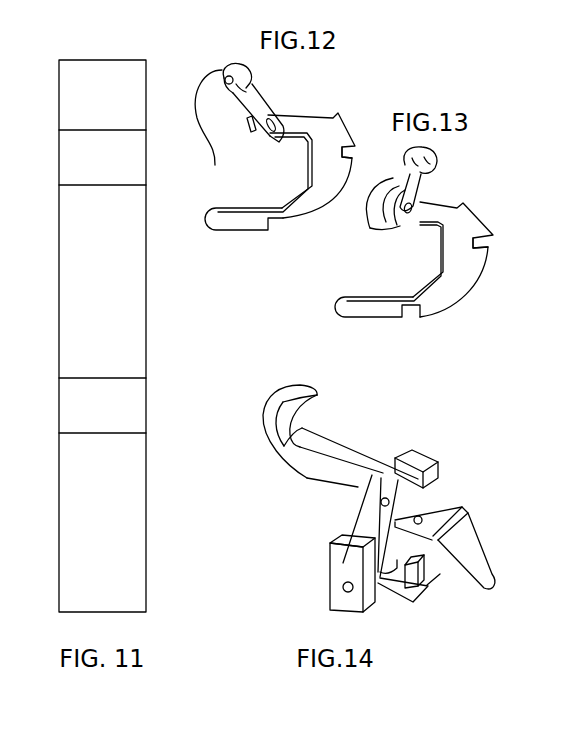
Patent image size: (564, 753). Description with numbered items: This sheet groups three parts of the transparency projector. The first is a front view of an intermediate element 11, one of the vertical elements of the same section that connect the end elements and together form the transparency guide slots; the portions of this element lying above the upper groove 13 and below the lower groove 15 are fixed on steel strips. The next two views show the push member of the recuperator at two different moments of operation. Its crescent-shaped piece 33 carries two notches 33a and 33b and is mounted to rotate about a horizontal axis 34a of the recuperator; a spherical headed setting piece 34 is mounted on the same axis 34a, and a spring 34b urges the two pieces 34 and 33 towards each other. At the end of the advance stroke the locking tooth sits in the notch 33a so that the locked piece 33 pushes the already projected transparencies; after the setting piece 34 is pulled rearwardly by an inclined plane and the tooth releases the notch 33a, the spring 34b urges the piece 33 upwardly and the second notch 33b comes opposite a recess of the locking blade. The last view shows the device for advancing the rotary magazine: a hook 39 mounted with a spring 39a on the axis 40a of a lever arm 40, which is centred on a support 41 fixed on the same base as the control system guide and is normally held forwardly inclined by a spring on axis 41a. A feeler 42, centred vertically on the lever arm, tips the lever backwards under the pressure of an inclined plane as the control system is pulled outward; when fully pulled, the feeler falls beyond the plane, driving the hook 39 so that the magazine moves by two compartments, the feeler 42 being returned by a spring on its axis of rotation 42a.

In FIG. 11, the intermediate element 11 is at (100, 274).
In FIG. 11, the upper groove 13 is at (82, 96).
In FIG. 11, the lower groove 15 is at (95, 498).
In FIG. 12, the crescent-shaped piece 33 is at (322, 188).
In FIG. 13, the crescent-shaped piece 33 is at (447, 288).
In FIG. 12, the notch 33a is at (358, 146).
In FIG. 13, the notch 33a is at (491, 238).
In FIG. 12, the second notch 33b is at (272, 233).
In FIG. 13, the second notch 33b is at (408, 313).
In FIG. 12, the spherical headed setting piece 34 is at (215, 165).
In FIG. 12, the horizontal axis 34a is at (276, 140).
In FIG. 13, the horizontal axis 34a is at (420, 197).
In FIG. 12, the spring 34b is at (247, 97).
In FIG. 13, the spring 34b is at (370, 223).
In FIG. 14, the hook 39 is at (302, 435).
In FIG. 14, the spring 39a is at (310, 478).
In FIG. 14, the lever arm 40 is at (377, 527).
In FIG. 14, the axis 40a is at (389, 500).
In FIG. 14, the support 41 is at (353, 567).
In FIG. 14, the axis 41a is at (343, 591).
In FIG. 14, the feeler 42 is at (462, 578).
In FIG. 14, the axis of rotation 42a is at (422, 518).